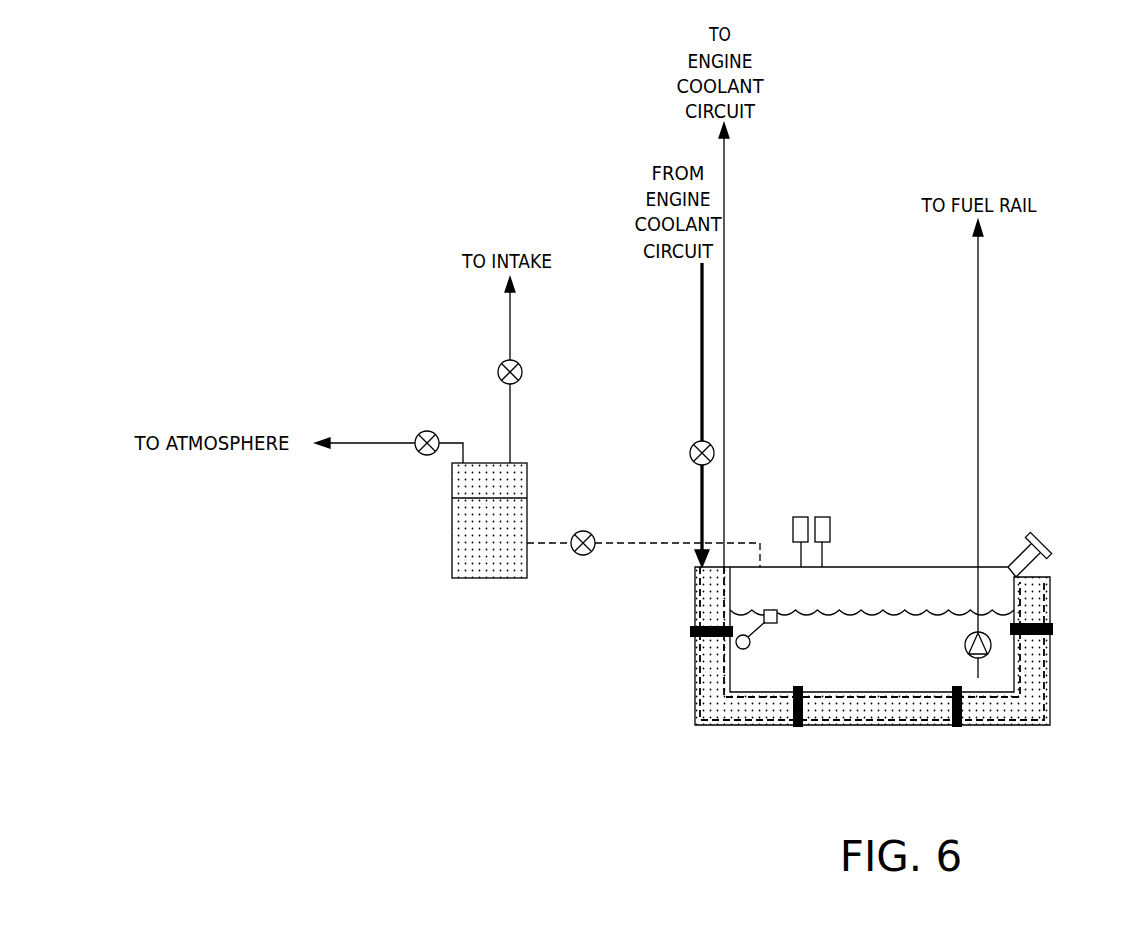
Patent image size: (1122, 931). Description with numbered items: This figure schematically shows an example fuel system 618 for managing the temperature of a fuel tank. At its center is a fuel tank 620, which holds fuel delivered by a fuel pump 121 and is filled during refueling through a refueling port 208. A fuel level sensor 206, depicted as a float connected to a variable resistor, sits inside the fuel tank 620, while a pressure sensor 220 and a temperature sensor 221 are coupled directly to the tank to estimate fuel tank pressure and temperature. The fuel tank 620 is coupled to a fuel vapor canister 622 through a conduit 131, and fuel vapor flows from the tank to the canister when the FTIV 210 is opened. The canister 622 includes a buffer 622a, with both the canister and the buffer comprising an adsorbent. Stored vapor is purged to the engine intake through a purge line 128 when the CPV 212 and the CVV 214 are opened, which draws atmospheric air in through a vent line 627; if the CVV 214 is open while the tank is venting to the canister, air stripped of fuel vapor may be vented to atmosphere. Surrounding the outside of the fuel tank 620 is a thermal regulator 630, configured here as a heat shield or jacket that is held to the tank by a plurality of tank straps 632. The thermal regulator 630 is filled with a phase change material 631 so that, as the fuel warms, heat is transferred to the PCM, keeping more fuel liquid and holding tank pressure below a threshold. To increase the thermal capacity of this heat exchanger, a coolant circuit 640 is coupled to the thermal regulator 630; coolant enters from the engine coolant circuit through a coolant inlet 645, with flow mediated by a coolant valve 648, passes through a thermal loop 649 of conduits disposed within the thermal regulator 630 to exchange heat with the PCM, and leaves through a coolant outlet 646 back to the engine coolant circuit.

The purge line 128 is at (511, 331).
The CPV 212 is at (519, 367).
The CVV 214 is at (427, 431).
The vent line 627 is at (401, 443).
The fuel vapor canister 622 is at (474, 533).
The buffer 622a is at (510, 492).
The FTIV 210 is at (583, 531).
The conduit 131 is at (633, 543).
The coolant circuit 640 is at (711, 345).
The coolant inlet 645 is at (700, 342).
The coolant valve 648 is at (689, 453).
The coolant outlet 646 is at (726, 452).
The temperature sensor 221 is at (801, 516).
The pressure sensor 220 is at (830, 523).
The fuel level sensor 206 is at (775, 610).
The fuel tank 620 is at (890, 604).
The fuel pump 121 is at (966, 646).
The thermal regulator 630 is at (874, 662).
The phase change material 631 is at (888, 718).
The thermal loop 649 is at (1036, 718).
The tank straps 632 is at (690, 633).
The refueling port 208 is at (1040, 529).
The fuel system 618 is at (875, 508).